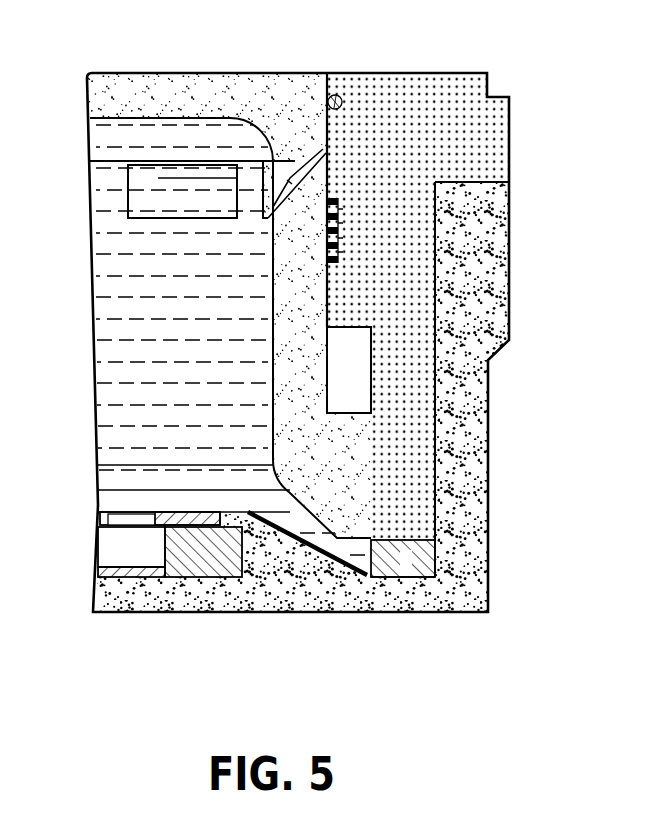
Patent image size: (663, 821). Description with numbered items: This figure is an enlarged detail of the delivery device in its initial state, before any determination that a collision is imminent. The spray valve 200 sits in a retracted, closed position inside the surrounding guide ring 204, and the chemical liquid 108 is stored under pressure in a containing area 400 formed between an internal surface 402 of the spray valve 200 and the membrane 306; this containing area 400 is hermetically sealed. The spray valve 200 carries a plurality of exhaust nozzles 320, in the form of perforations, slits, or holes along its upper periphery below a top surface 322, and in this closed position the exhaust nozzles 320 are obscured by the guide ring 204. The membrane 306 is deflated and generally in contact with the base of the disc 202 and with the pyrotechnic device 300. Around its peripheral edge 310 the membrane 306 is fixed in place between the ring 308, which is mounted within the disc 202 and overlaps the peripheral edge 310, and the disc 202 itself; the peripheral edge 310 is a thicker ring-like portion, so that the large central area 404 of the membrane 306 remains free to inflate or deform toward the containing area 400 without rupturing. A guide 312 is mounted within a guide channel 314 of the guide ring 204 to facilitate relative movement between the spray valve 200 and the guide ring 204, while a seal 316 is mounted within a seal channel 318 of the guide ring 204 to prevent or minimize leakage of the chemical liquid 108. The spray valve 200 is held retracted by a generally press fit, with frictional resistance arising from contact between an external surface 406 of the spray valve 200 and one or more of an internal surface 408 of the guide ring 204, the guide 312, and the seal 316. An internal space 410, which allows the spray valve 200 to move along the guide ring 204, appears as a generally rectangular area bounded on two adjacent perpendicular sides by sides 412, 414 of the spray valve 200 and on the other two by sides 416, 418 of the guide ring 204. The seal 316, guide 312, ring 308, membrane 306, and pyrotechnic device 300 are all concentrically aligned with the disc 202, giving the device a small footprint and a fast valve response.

The chemical liquid 108 is at (231, 340).
The spray valve 200 is at (100, 91).
The disc 202 is at (502, 263).
The guide ring 204 is at (522, 127).
The pyrotechnic device 300 is at (178, 548).
The membrane 306 is at (140, 496).
The ring 308 is at (382, 572).
The peripheral edge 310 is at (447, 584).
The guide 312 is at (357, 213).
The guide channel 314 is at (338, 237).
The seal 316 is at (340, 95).
The seal channel 318 is at (343, 104).
The exhaust nozzles 320 is at (140, 181).
The top surface 322 is at (166, 73).
The containing area 400 is at (138, 331).
The internal surface 402 is at (265, 398).
The central area 404 is at (262, 546).
The external surface 406 is at (327, 290).
The internal surface 408 is at (327, 128).
The internal space 410 is at (372, 370).
The side 412 is at (323, 367).
The side 414 is at (347, 413).
The side 416 is at (350, 323).
The side 418 is at (373, 352).